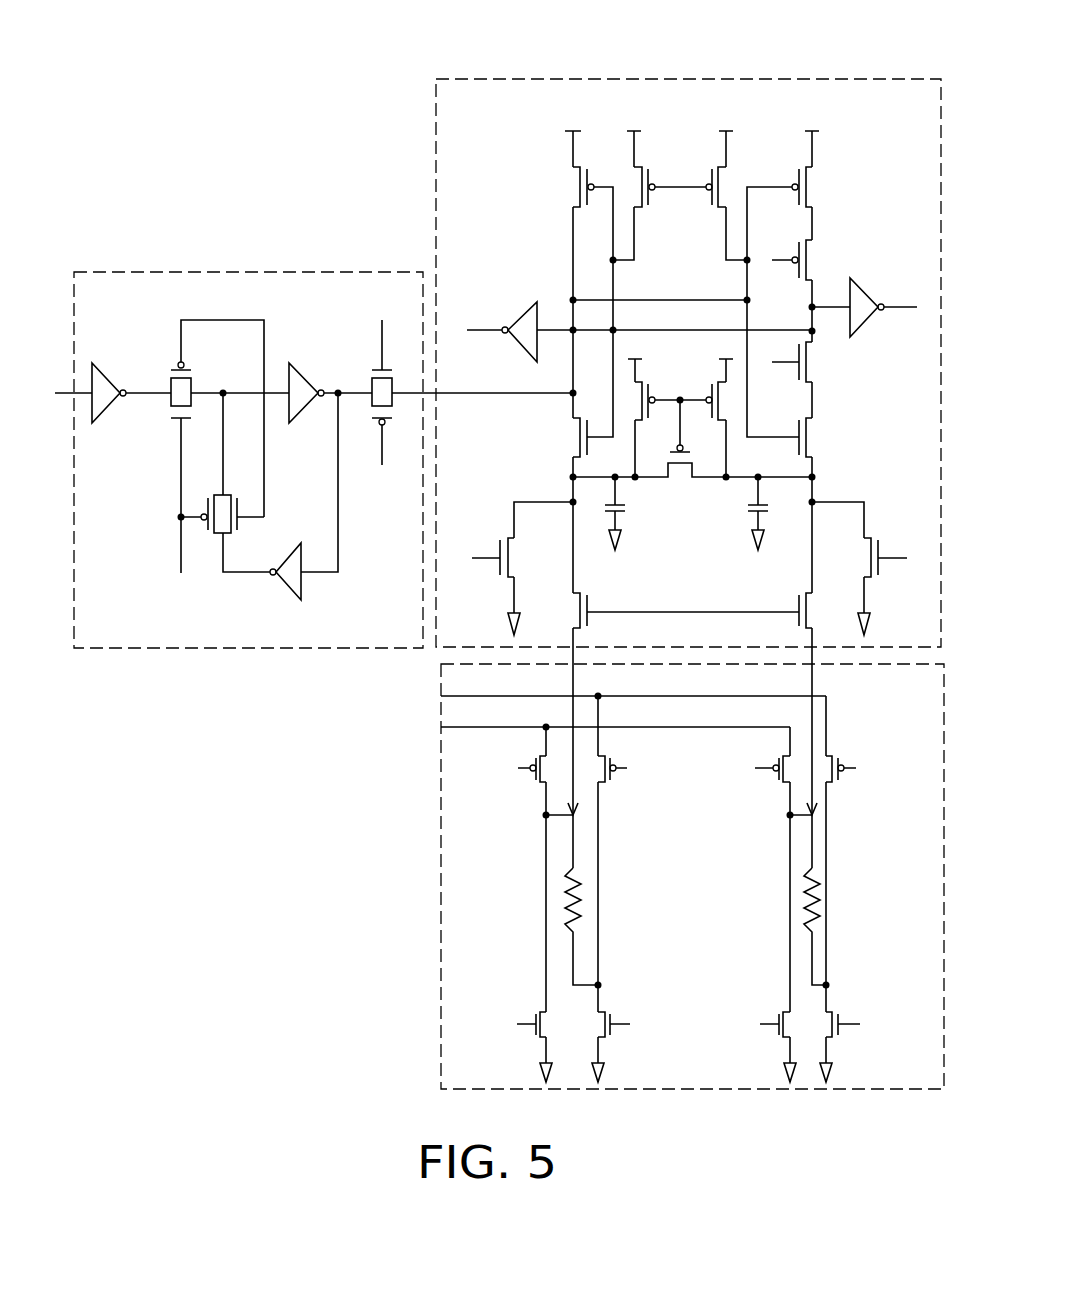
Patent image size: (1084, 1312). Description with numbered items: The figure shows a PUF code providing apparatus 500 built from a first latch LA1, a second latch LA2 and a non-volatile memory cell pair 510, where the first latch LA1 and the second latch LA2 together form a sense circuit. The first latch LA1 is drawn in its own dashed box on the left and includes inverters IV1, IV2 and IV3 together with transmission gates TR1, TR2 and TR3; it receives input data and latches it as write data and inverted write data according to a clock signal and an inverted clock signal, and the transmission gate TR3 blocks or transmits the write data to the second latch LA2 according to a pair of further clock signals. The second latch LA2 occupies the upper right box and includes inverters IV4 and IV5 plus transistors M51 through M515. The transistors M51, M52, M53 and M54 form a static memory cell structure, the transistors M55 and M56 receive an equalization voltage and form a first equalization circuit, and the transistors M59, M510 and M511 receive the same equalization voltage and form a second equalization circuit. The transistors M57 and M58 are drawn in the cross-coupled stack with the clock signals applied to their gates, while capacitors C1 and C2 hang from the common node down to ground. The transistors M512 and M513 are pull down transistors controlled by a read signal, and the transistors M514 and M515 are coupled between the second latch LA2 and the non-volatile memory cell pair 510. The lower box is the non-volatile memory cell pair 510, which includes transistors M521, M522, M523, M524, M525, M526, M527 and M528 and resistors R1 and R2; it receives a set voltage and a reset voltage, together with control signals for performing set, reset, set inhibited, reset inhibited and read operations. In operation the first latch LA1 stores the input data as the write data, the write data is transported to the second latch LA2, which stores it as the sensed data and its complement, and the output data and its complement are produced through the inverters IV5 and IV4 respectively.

The PUF code providing apparatus 500 is at (942, 1145).
The first latch LA1 is at (228, 272).
The second latch LA2 is at (688, 79).
The non-volatile memory cell pair 510 is at (441, 857).
The inverter IV1 is at (110, 364).
The inverter IV2 is at (305, 368).
The inverter IV3 is at (303, 590).
The inverter IV4 is at (522, 313).
The inverter IV5 is at (863, 288).
The transmission gate TR1 is at (193, 383).
The transmission gate TR2 is at (232, 493).
The transmission gate TR3 is at (371, 385).
The transistor M51 is at (577, 284).
The transistor M52 is at (563, 505).
The transistor M53 is at (800, 284).
The transistor M54 is at (824, 505).
The transistor M55 is at (632, 182).
The transistor M56 is at (728, 182).
The transistor M57 is at (811, 291).
The transistor M58 is at (811, 380).
The transistor M59 is at (635, 402).
The transistor M510 is at (730, 402).
The transistor M511 is at (692, 457).
The pull down transistor M512 is at (522, 568).
The pull down transistor M513 is at (859, 568).
The transistor M514 is at (664, 730).
The transistor M515 is at (827, 730).
The transistor M521 is at (538, 783).
The transistor M522 is at (538, 1008).
The transistor M523 is at (604, 783).
The transistor M524 is at (604, 1008).
The transistor M525 is at (783, 783).
The transistor M526 is at (783, 1008).
The transistor M527 is at (833, 783).
The transistor M528 is at (833, 1008).
The capacitor C1 is at (606, 513).
The capacitor C2 is at (772, 513).
The resistor R1 is at (578, 907).
The resistor R2 is at (818, 907).